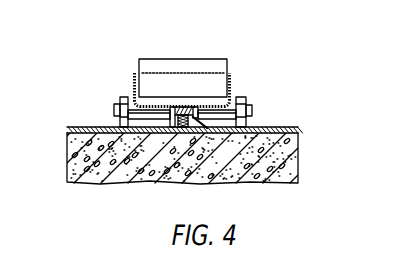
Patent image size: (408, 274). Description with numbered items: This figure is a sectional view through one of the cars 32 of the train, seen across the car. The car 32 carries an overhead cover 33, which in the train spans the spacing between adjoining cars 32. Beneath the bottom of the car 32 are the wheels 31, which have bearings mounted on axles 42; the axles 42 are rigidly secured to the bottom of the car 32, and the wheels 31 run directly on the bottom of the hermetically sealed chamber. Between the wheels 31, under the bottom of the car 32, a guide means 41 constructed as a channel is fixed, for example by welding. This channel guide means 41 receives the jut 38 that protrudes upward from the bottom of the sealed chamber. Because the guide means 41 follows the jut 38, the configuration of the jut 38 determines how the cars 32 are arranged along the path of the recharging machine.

The wheels 31 is at (243, 107).
The car 32 is at (220, 93).
The overhead cover 33 is at (190, 67).
The jut 38 is at (180, 133).
The guide means 41 is at (207, 130).
The axles 42 is at (228, 112).